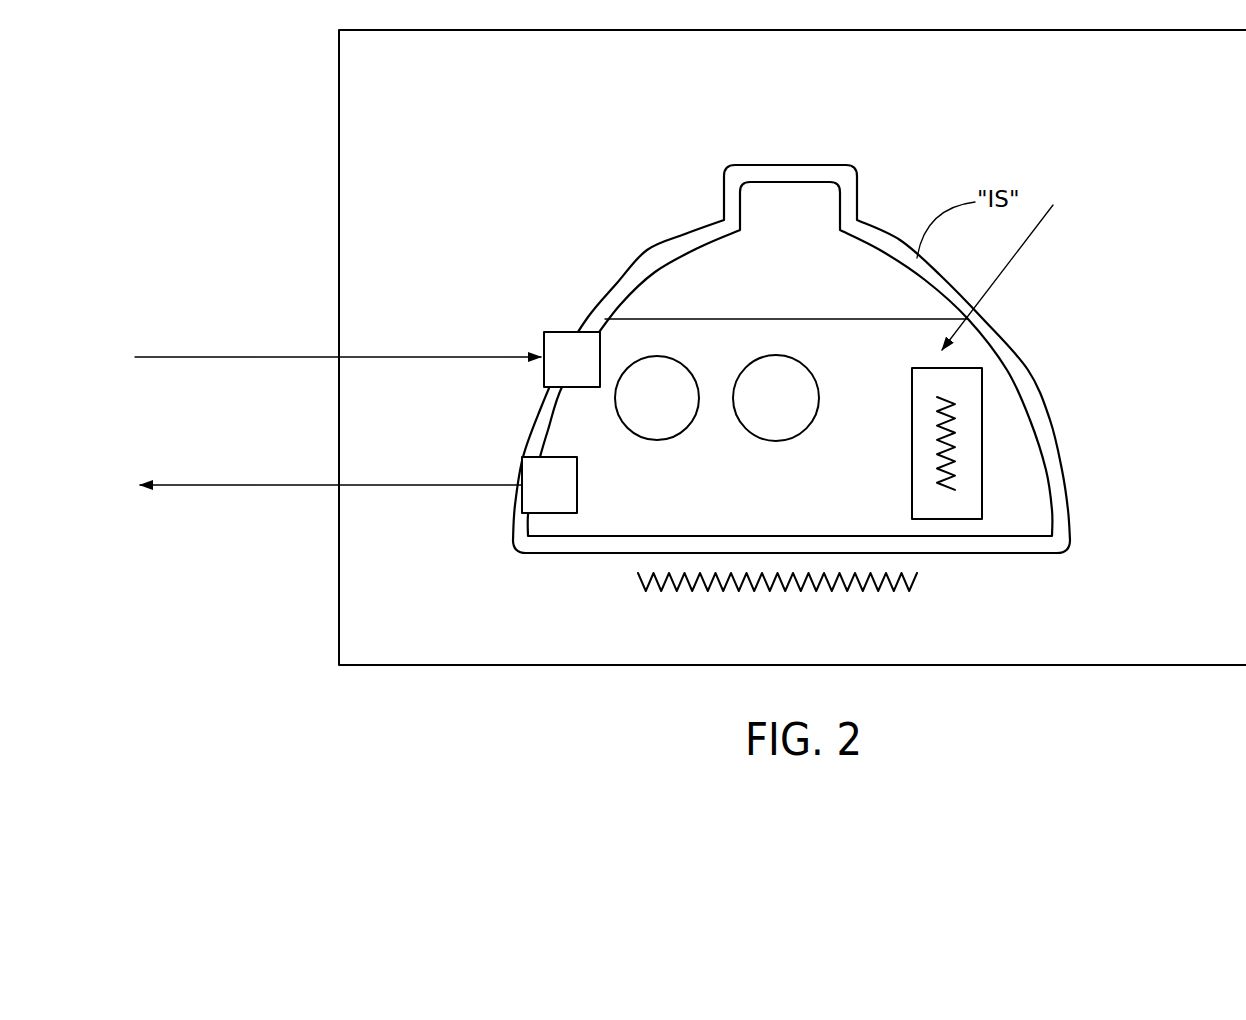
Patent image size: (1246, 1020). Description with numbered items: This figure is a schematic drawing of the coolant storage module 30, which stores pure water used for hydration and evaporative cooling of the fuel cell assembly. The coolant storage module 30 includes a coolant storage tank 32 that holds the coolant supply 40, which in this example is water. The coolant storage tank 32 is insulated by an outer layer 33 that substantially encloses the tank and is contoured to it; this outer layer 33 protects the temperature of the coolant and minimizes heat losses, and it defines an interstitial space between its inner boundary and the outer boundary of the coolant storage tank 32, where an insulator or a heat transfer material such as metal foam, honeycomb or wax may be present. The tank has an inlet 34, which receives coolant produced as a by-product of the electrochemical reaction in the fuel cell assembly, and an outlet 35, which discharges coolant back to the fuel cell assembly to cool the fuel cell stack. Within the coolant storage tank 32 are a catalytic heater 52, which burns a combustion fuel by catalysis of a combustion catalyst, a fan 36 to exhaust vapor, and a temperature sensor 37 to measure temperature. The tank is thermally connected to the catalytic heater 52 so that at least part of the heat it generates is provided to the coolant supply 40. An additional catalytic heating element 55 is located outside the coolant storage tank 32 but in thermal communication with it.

The coolant storage module 30 is at (415, 111).
The coolant storage tank 32 is at (872, 246).
The outer layer 33 is at (663, 258).
The inlet 34 is at (587, 370).
The outlet 35 is at (562, 496).
The fan 36 is at (791, 411).
The temperature sensor 37 is at (672, 411).
The coolant supply 40 is at (796, 526).
The catalytic heater 52 is at (1008, 466).
The catalytic heating element 55 is at (846, 591).